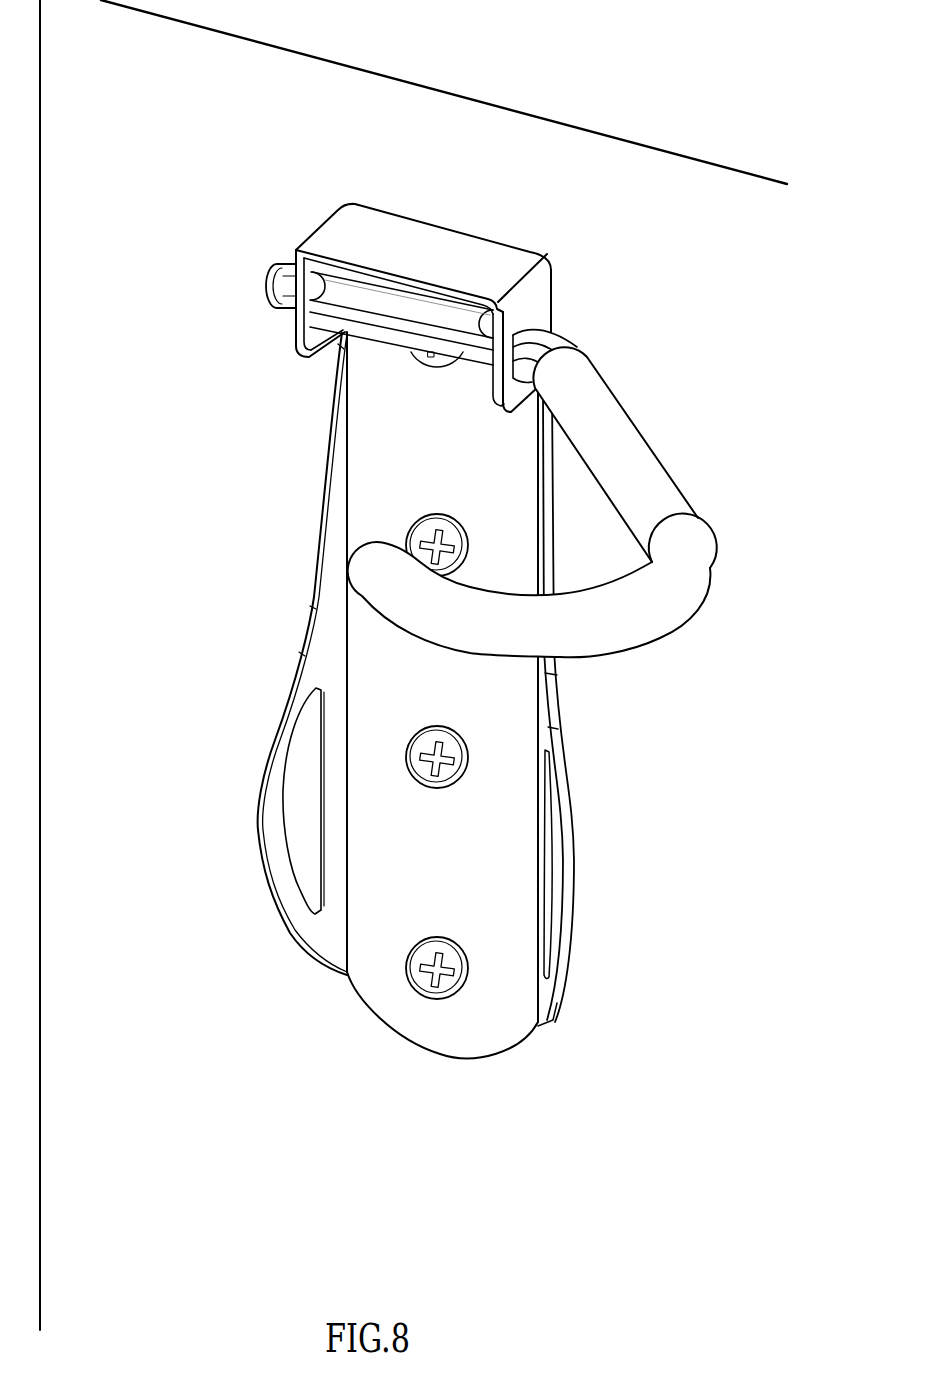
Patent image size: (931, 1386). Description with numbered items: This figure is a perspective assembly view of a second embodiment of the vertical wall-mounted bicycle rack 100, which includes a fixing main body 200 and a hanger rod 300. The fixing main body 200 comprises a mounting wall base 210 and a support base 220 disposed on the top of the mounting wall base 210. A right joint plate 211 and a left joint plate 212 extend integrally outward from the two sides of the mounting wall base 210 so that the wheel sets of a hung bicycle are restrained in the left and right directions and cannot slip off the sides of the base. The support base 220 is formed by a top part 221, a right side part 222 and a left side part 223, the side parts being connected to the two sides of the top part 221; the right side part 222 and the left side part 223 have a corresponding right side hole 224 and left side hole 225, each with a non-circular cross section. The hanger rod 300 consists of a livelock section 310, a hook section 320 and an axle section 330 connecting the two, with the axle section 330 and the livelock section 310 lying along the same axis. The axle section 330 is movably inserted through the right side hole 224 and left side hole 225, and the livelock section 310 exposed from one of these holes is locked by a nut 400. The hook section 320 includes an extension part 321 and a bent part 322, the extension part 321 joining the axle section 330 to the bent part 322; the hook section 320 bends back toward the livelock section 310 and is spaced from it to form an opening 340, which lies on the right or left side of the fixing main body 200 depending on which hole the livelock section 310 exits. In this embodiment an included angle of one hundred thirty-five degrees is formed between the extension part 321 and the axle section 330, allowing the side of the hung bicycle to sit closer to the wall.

The vertical wall-mounted bicycle rack 100 is at (219, 605).
The fixing main body 200 is at (425, 1063).
The mounting wall base 210 is at (392, 1012).
The right joint plate 211 is at (565, 860).
The left joint plate 212 is at (273, 817).
The support base 220 is at (491, 233).
The top part 221 is at (360, 272).
The right side part 222 is at (510, 302).
The left side part 223 is at (295, 333).
The right side hole 224 is at (530, 318).
The left side hole 225 is at (325, 272).
The hanger rod 300 is at (634, 378).
The livelock section 310 is at (258, 270).
The hook section 320 is at (563, 550).
The extension part 321 is at (650, 466).
The bent part 322 is at (584, 656).
The axle section 330 is at (400, 300).
The opening 340 is at (365, 484).
The nut 400 is at (283, 267).